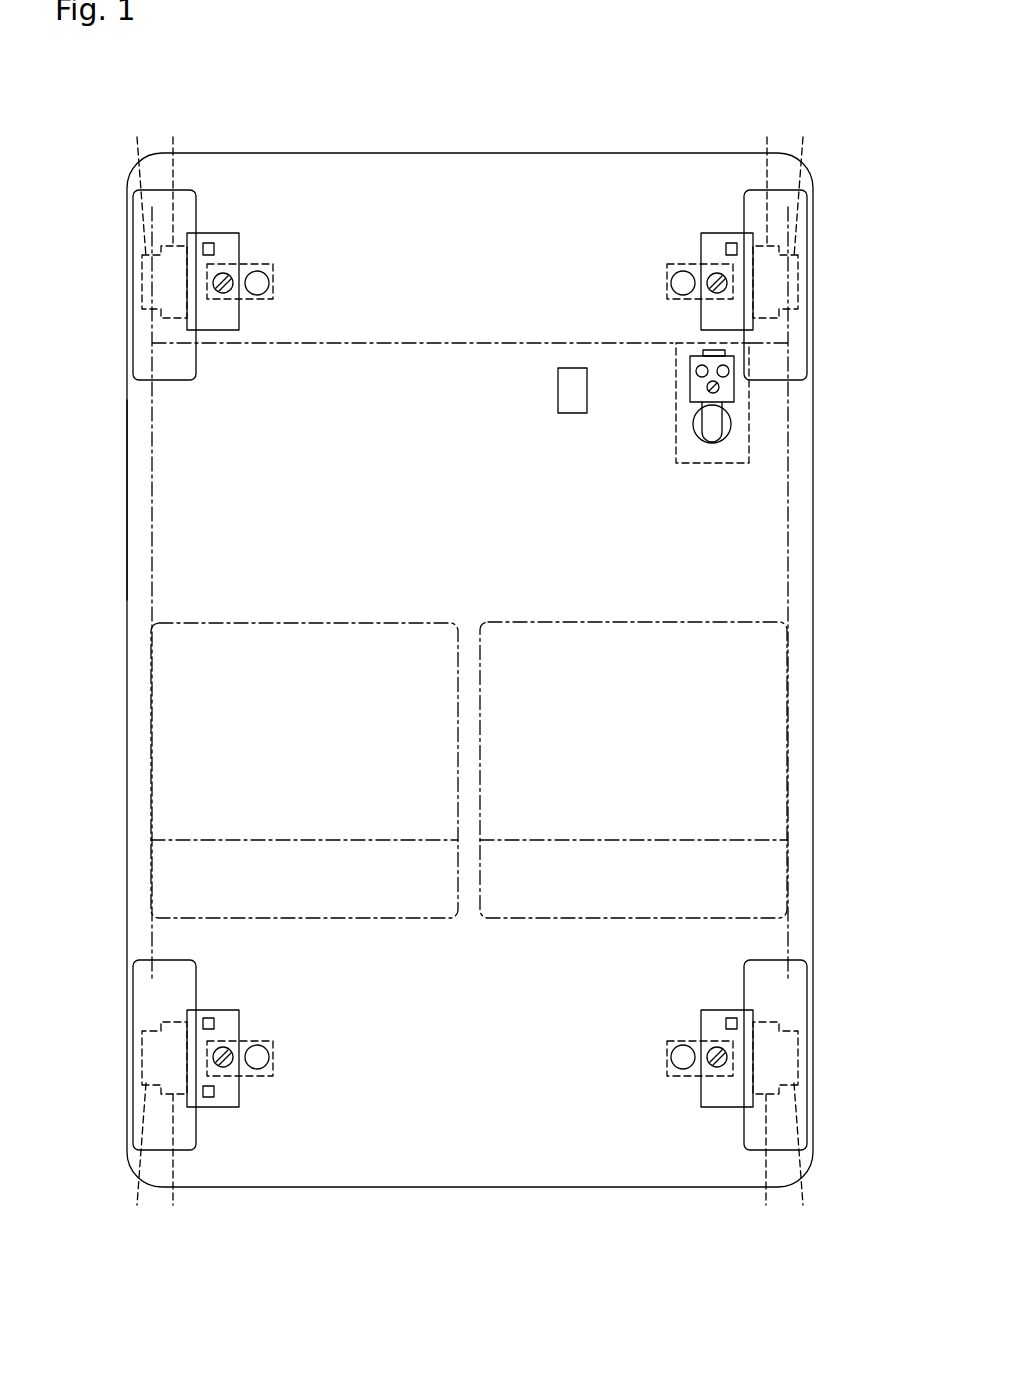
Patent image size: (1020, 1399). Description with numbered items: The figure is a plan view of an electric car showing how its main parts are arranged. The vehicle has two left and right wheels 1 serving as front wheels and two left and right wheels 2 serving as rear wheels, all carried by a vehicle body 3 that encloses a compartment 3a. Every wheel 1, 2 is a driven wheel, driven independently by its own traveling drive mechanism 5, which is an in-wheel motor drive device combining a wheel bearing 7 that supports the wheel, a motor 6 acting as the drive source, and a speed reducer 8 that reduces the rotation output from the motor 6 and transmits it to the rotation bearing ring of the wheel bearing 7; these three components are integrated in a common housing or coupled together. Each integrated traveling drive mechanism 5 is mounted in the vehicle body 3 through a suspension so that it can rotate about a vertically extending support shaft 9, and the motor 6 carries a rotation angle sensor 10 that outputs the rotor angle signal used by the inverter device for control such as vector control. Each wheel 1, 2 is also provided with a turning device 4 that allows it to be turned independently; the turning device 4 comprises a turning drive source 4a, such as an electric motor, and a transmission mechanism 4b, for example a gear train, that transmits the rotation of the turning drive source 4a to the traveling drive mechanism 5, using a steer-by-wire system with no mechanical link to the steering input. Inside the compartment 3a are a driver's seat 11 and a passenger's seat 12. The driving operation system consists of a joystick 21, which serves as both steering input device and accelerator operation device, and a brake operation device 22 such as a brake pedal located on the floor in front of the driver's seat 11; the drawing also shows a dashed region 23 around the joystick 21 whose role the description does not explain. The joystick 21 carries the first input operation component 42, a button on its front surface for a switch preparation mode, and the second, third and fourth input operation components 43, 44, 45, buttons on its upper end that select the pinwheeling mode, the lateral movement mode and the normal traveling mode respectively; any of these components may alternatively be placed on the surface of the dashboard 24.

The front wheel 1 is at (138, 242).
The rear wheel 2 is at (138, 1098).
The vehicle body 3 is at (118, 447).
The compartment 3a is at (208, 497).
The turning device 4 is at (277, 280).
The turning drive source 4a is at (258, 282).
The transmission mechanism 4b is at (252, 265).
The traveling drive mechanism 5 is at (125, 110).
The motor 6 is at (213, 233).
The wheel bearing 7 is at (469, 670).
The speed reducer 8 is at (469, 670).
The support shaft 9 is at (224, 275).
The rotation angle sensor 10 is at (202, 250).
The driver's seat 11 is at (727, 620).
The passenger's seat 12 is at (213, 620).
The joystick 21 is at (714, 427).
The brake operation device 22 is at (572, 413).
The steering unit 23 is at (750, 403).
The dashboard 24 is at (397, 328).
The first input operation component 42 is at (703, 352).
The second input operation component 43 is at (728, 373).
The third input operation component 44 is at (698, 377).
The fourth input operation component 45 is at (717, 391).